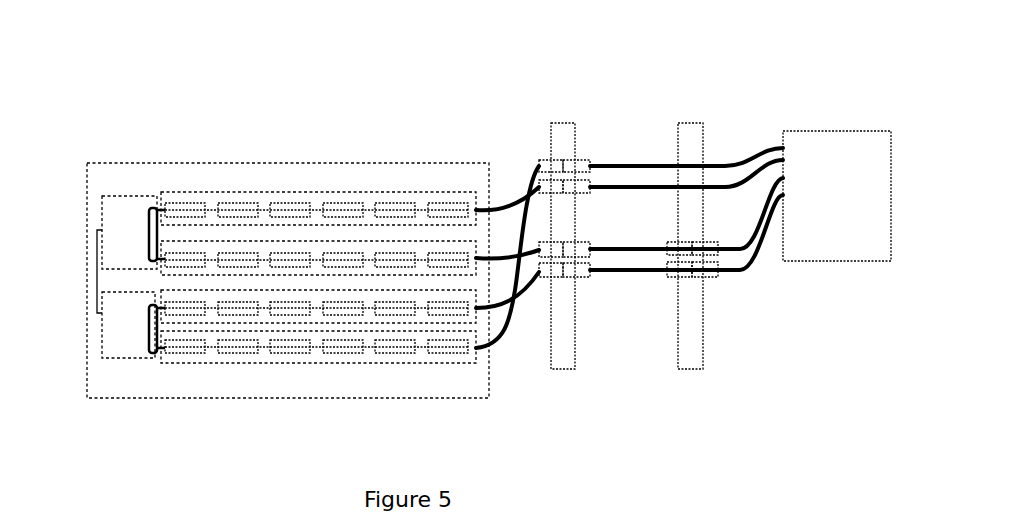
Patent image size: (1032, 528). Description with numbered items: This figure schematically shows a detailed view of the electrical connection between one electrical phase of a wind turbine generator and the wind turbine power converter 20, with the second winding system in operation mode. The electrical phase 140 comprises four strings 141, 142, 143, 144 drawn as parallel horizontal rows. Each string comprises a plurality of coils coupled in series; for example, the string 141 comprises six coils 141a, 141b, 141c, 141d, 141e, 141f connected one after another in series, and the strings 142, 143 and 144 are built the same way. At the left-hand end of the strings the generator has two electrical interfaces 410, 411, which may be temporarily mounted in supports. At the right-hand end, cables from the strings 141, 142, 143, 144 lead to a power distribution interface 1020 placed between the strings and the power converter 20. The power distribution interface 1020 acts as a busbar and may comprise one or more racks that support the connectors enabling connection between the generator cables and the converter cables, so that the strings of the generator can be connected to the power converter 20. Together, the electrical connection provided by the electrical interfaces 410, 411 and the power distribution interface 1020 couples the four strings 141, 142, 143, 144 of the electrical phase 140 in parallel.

The electrical phase 140 is at (87, 163).
The string 141 is at (325, 176).
The coil 141a is at (192, 212).
The coil 141b is at (247, 212).
The coil 141c is at (300, 212).
The coil 141d is at (357, 212).
The coil 141e is at (408, 212).
The coil 141f is at (462, 212).
The string 142 is at (176, 248).
The string 143 is at (315, 315).
The string 144 is at (215, 355).
The electrical interface 410 is at (113, 225).
The electrical interface 411 is at (113, 350).
The power distribution interface 1020 is at (638, 370).
The power converter 20 is at (830, 130).